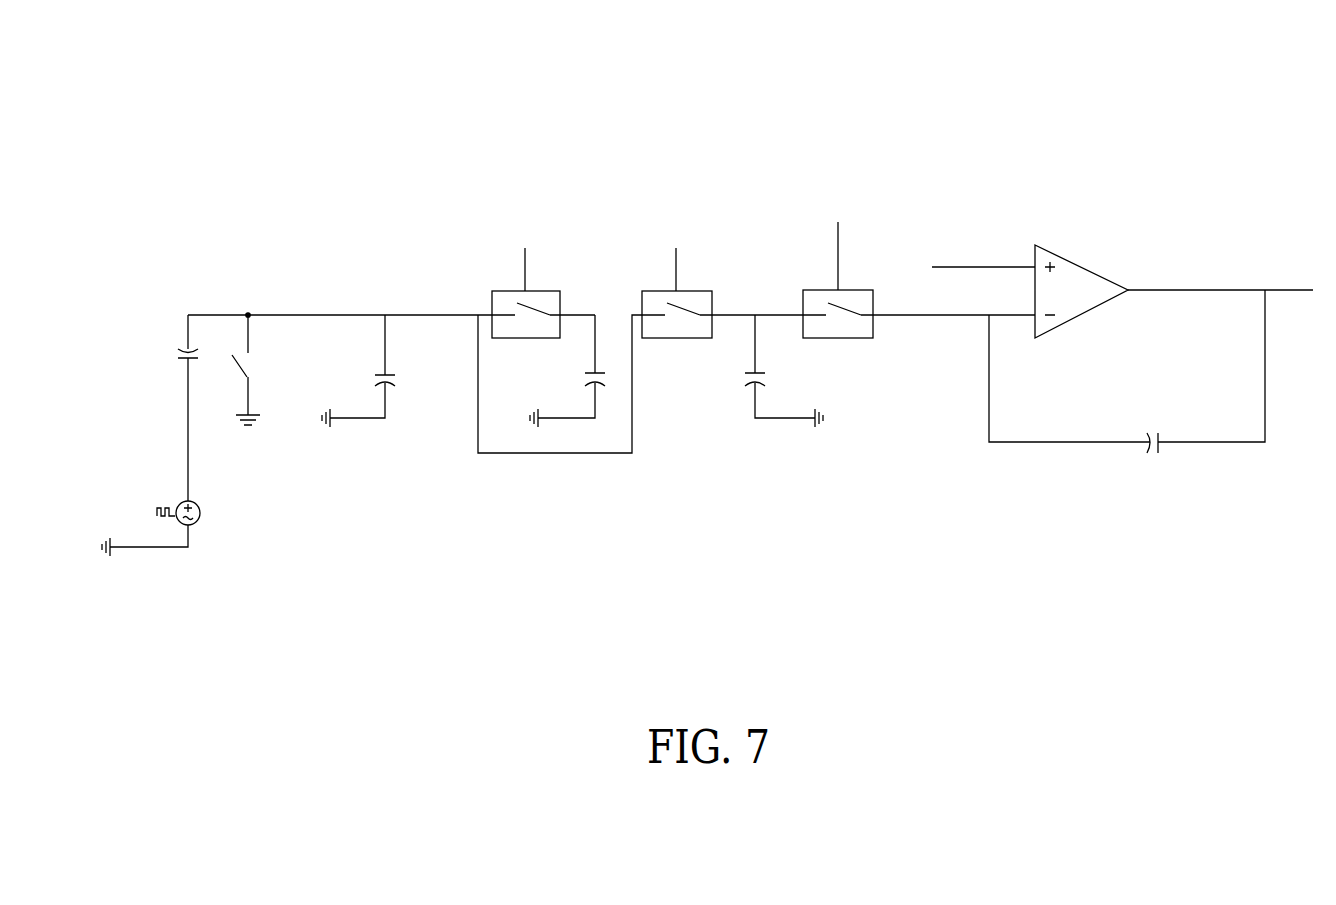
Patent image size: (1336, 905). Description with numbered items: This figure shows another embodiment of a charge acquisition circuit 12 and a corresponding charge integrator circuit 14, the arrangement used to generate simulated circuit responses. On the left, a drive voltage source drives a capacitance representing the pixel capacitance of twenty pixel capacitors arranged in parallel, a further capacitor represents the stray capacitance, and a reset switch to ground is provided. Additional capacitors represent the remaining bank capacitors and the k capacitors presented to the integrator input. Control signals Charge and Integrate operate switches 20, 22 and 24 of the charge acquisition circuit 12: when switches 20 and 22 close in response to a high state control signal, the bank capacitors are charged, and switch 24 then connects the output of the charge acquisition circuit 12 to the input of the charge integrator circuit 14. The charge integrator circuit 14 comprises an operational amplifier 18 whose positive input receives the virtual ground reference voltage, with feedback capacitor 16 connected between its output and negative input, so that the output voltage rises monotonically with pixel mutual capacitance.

The charge acquisition circuit 12 is at (578, 72).
The charge integrator circuit 14 is at (1186, 193).
The feedback capacitor 16 is at (1160, 446).
The operational amplifier 18 is at (1070, 262).
The switch 20 is at (503, 291).
The switch 22 is at (698, 291).
The switch 24 is at (858, 290).